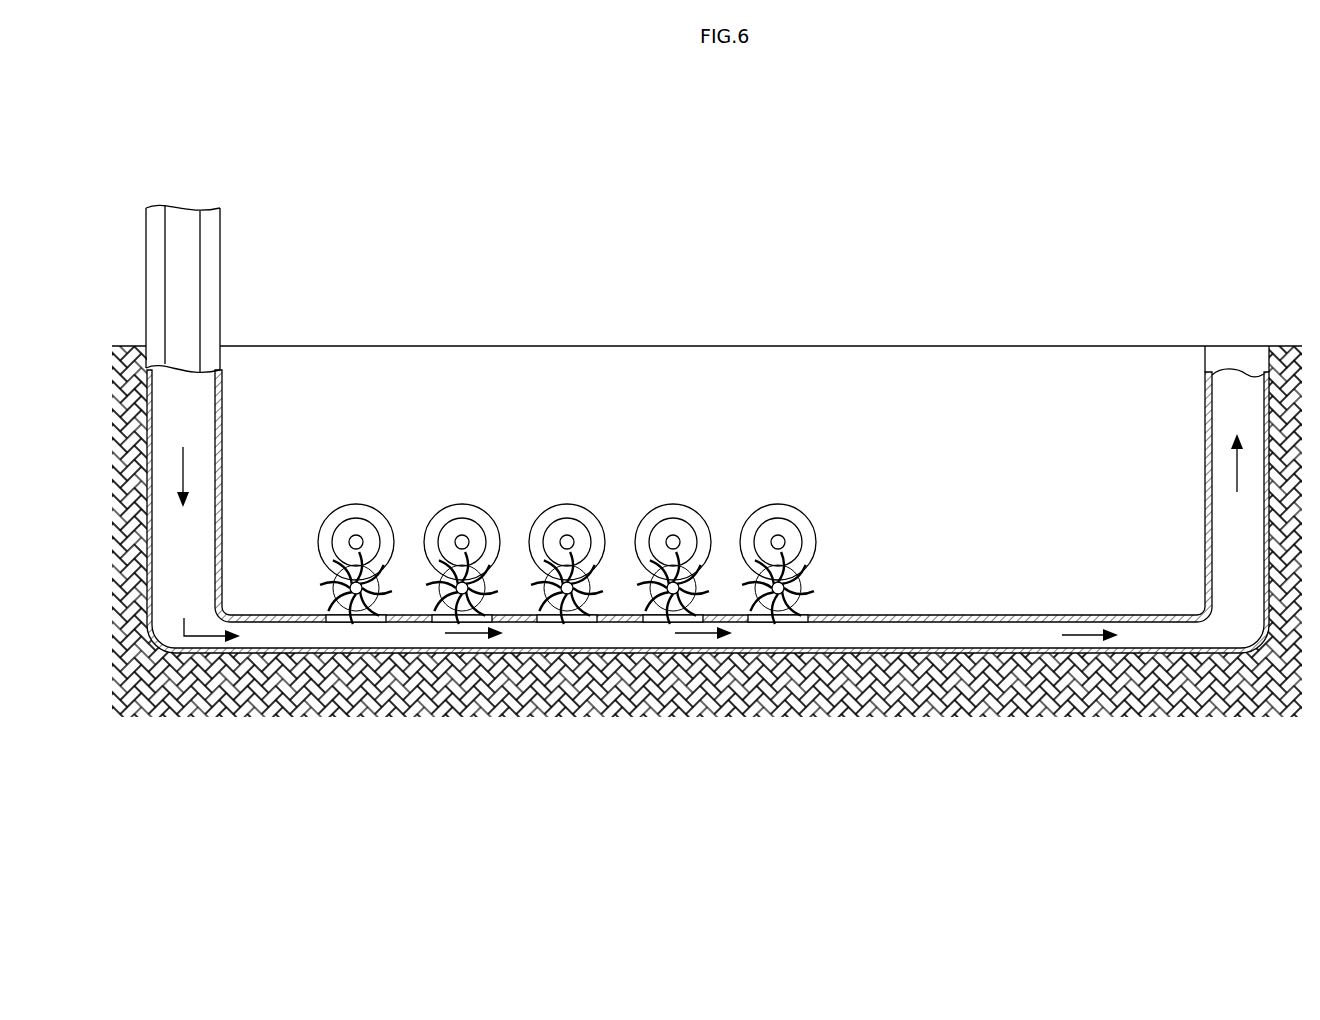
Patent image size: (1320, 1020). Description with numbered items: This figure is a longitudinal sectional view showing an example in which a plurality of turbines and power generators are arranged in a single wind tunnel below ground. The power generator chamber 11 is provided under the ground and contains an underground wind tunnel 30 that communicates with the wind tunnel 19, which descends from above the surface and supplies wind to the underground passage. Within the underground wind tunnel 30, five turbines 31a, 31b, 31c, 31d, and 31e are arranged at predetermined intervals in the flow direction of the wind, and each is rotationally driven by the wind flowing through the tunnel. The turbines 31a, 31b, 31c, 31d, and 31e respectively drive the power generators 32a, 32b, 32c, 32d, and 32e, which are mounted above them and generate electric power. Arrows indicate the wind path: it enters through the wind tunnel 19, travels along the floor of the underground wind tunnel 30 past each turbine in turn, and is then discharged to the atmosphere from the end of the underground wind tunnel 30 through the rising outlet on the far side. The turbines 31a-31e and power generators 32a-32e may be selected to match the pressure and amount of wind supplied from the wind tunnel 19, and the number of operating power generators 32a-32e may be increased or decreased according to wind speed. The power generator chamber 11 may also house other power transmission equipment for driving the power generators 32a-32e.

The power generator chamber 11 is at (886, 336).
The wind tunnel 19 is at (181, 218).
The underground wind tunnel 30 is at (922, 632).
The turbine 31a is at (330, 587).
The turbine 31b is at (437, 586).
The turbine 31c is at (542, 586).
The turbine 31d is at (647, 586).
The turbine 31e is at (790, 587).
The power generator 32a is at (350, 521).
The power generator 32b is at (455, 521).
The power generator 32c is at (568, 521).
The power generator 32d is at (675, 521).
The power generator 32e is at (782, 521).